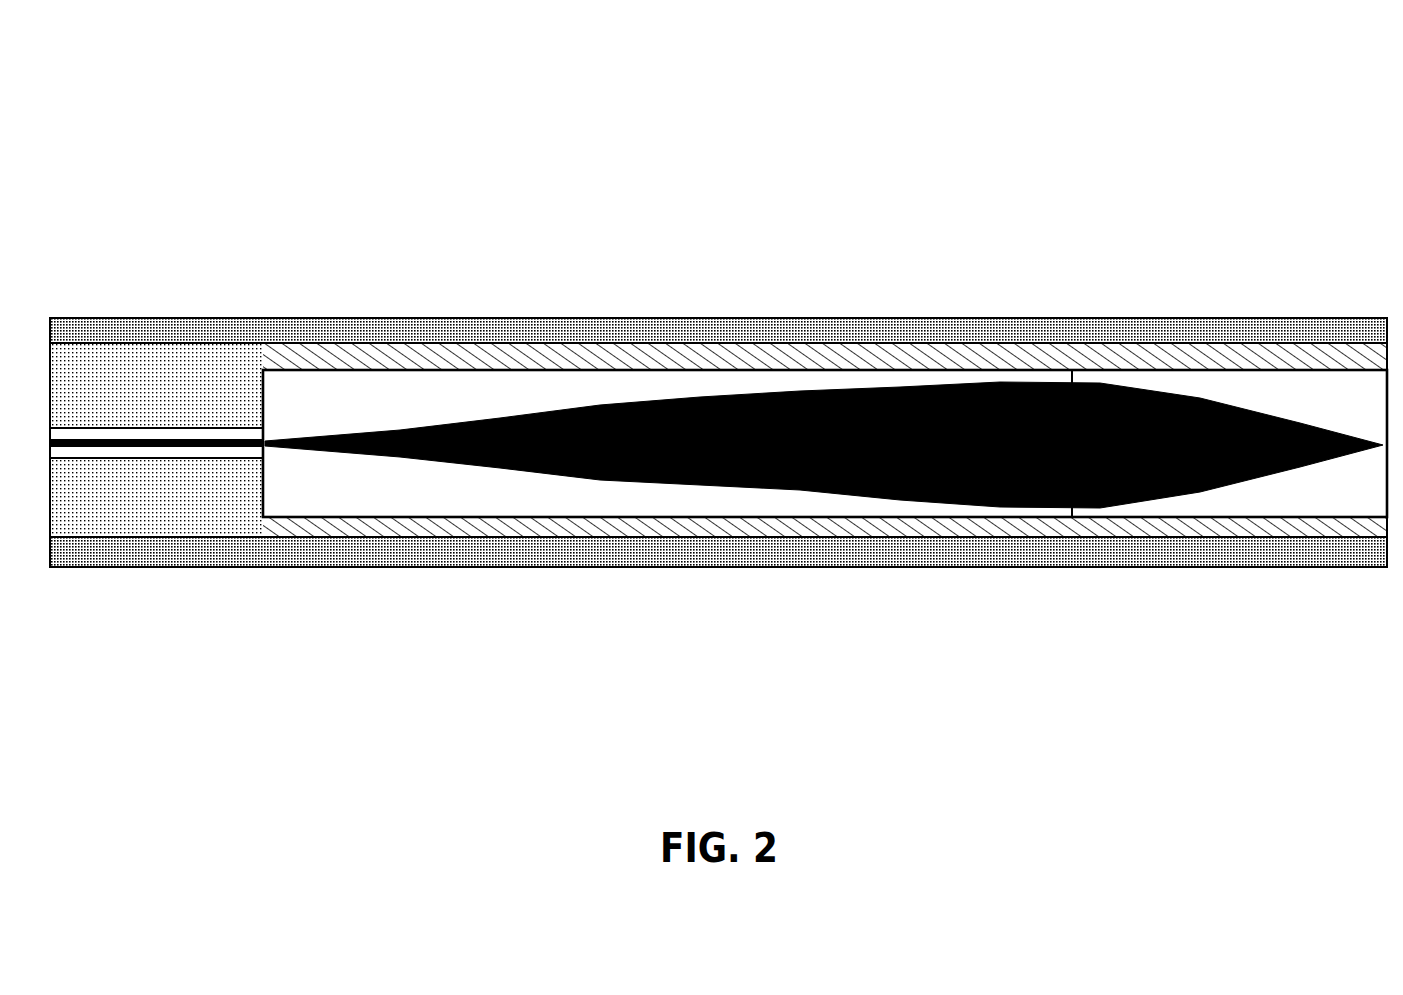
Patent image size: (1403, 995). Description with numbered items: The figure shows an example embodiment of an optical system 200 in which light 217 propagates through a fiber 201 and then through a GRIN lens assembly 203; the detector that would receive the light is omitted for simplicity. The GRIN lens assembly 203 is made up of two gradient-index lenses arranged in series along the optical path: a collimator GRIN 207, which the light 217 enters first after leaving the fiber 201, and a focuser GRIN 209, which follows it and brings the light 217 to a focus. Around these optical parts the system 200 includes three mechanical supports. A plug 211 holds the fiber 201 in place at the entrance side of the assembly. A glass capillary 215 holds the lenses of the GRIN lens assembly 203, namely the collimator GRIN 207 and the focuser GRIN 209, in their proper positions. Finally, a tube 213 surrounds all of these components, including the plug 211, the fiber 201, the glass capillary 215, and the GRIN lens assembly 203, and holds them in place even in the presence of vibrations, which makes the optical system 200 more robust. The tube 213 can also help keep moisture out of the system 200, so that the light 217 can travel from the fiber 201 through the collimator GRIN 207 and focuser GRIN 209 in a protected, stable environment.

The optical system 200 is at (718, 379).
The fiber 201 is at (172, 476).
The GRIN lens assembly 203 is at (825, 444).
The collimator GRIN 207 is at (763, 509).
The focuser GRIN 209 is at (1220, 517).
The plug 211 is at (152, 381).
The tube 213 is at (418, 577).
The glass capillary 215 is at (424, 335).
The light 217 is at (961, 397).